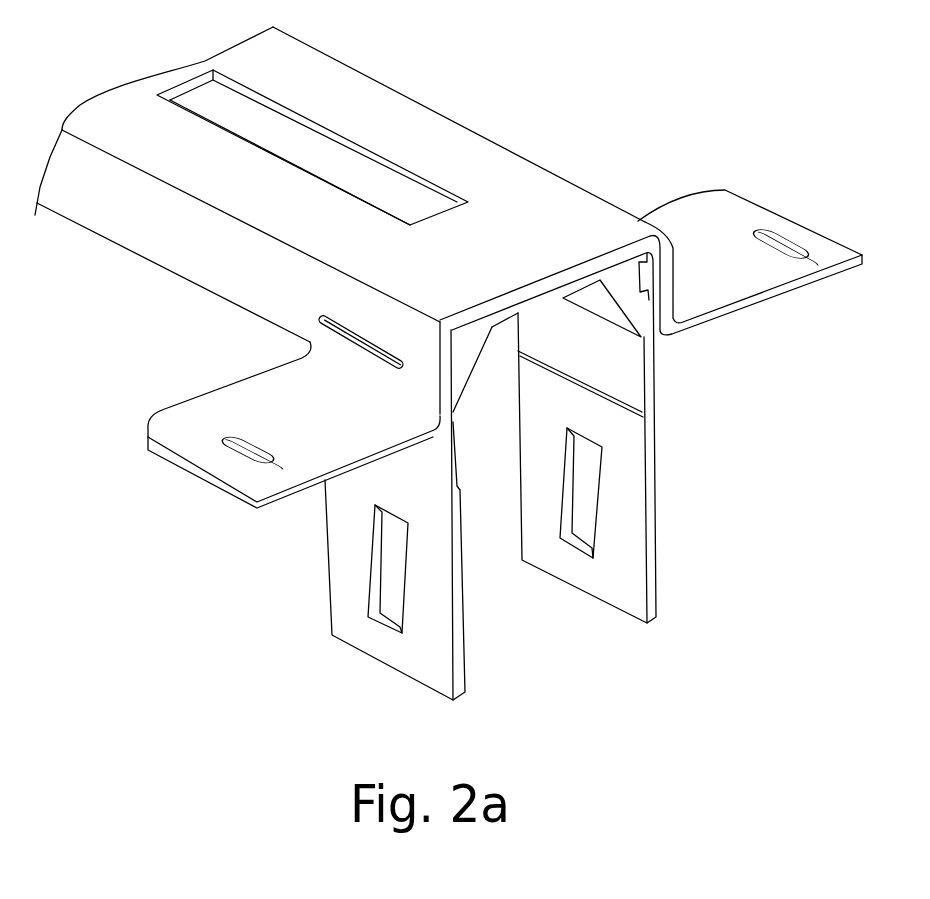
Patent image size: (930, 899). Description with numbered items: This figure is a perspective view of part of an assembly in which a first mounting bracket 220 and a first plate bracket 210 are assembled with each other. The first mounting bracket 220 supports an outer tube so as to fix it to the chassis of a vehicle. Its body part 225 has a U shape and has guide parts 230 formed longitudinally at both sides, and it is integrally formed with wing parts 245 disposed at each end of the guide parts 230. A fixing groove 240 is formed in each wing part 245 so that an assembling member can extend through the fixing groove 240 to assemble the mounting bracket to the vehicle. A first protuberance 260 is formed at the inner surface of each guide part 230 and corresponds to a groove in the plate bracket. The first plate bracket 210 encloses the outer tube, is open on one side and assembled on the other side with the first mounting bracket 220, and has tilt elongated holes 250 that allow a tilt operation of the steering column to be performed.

The first plate bracket 210 is at (642, 482).
The first mounting bracket 220 is at (510, 130).
The body part 225 is at (372, 105).
The guide parts 230 is at (160, 235).
The fixing groove 240 is at (228, 447).
The wing parts 245 is at (163, 434).
The tilt elongated holes 250 is at (395, 575).
The first protuberance 260 is at (350, 340).